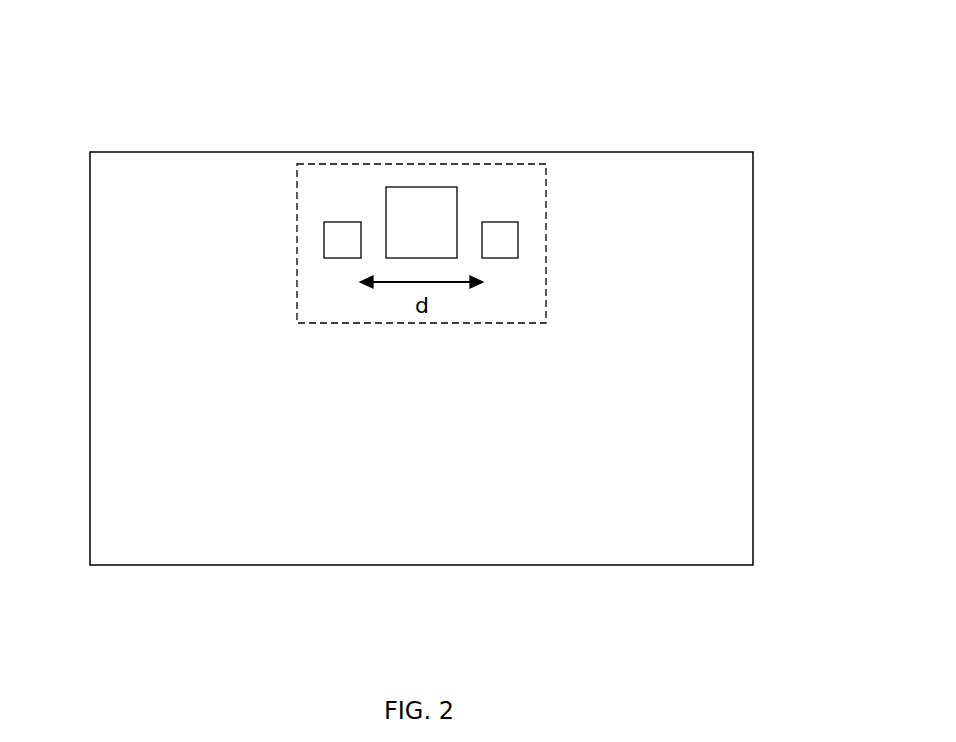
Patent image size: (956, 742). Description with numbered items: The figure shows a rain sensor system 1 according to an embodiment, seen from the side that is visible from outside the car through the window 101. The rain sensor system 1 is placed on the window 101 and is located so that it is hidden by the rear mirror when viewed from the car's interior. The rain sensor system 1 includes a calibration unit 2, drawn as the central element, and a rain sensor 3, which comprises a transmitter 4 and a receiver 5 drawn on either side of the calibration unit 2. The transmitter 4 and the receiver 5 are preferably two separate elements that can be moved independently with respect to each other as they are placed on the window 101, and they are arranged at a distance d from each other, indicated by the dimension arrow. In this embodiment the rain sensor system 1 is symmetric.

The rain sensor system 1 is at (521, 164).
The calibration unit 2 is at (390, 260).
The rain sensor 3 is at (421, 139).
The transmitter 4 is at (342, 222).
The receiver 5 is at (500, 222).
The window 101 is at (753, 172).